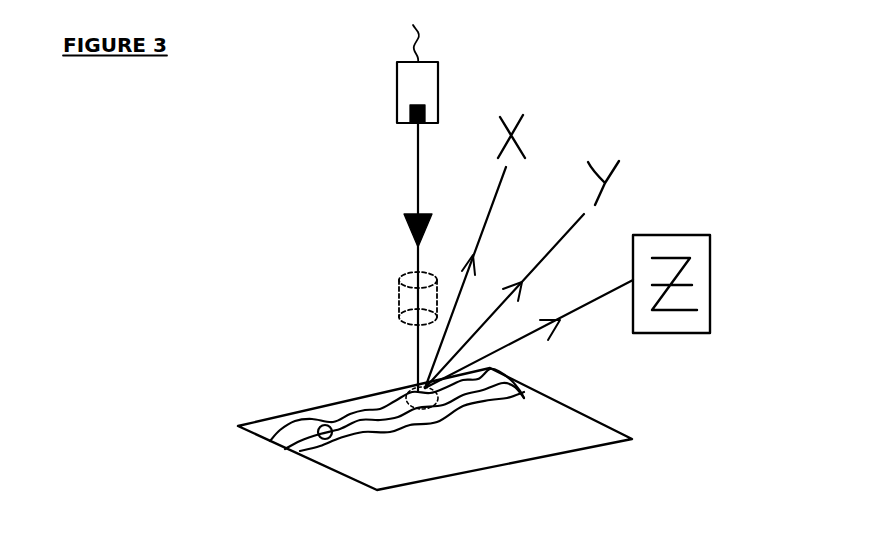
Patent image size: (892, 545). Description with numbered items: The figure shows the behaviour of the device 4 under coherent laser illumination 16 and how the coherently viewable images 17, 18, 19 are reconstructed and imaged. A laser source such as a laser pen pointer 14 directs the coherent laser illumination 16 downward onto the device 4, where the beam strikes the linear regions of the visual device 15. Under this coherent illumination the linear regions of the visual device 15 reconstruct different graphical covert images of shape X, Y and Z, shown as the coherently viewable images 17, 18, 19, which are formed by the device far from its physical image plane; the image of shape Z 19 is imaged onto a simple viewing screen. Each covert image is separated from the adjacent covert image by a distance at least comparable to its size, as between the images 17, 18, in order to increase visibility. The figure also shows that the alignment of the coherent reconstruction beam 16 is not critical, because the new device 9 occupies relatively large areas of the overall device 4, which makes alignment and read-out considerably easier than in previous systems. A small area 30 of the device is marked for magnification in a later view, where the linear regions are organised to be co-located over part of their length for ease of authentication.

The laser pen pointer 14 is at (436, 74).
The coherent laser illumination 16 is at (402, 295).
The linear regions of the visual device 15 is at (408, 386).
The coherently viewable image of shape X 17 is at (492, 246).
The coherently viewable image of shape Y 18 is at (539, 270).
The coherently viewable image of shape Z imaged on viewing screen 19 is at (586, 308).
The device 4 is at (435, 439).
The new device 9 is at (347, 444).
The small magnified area 30 is at (317, 428).